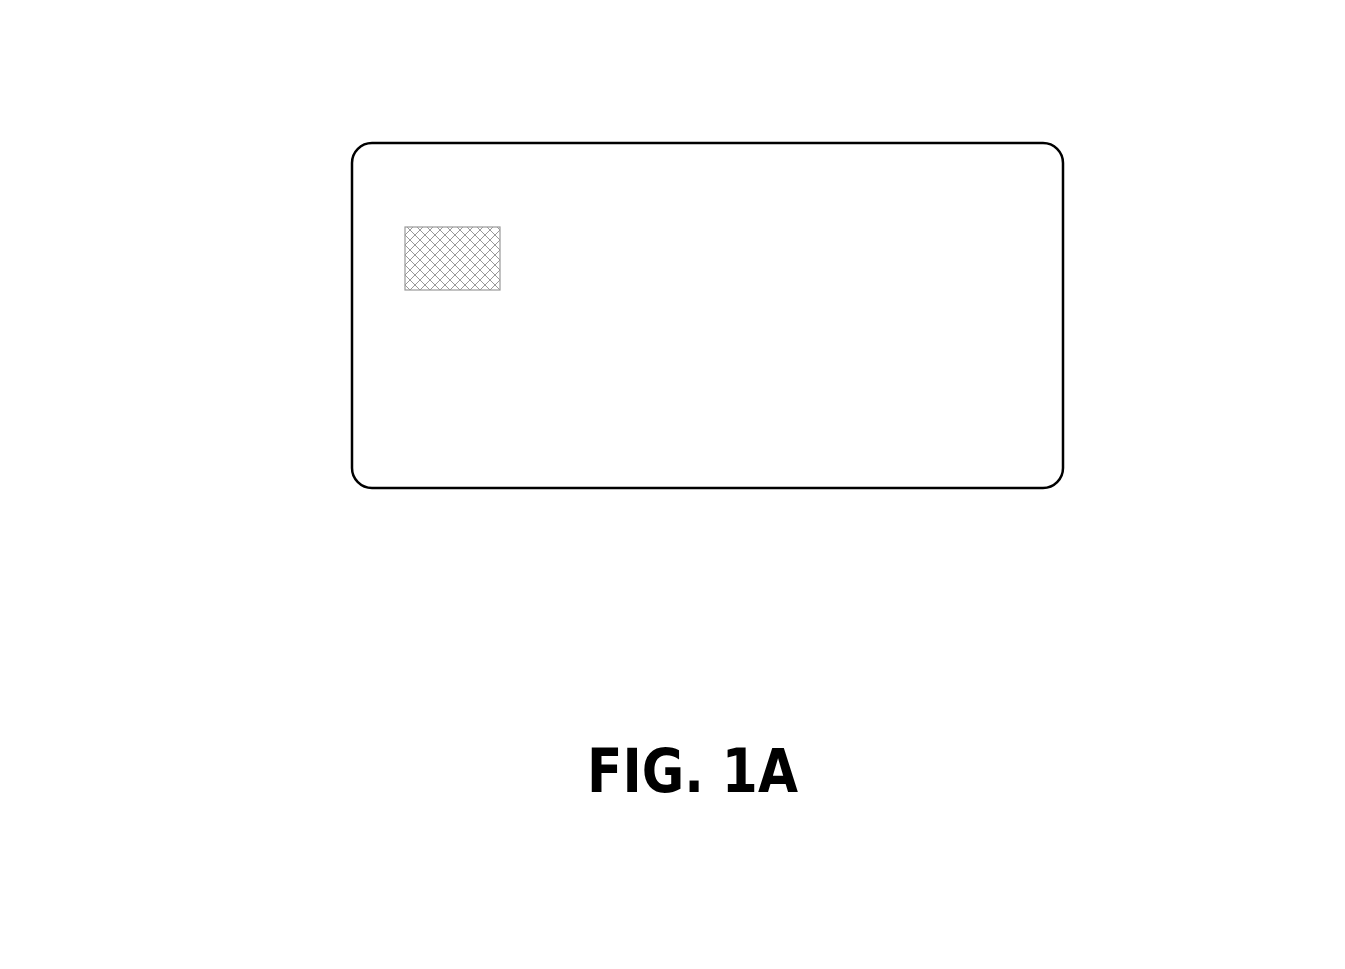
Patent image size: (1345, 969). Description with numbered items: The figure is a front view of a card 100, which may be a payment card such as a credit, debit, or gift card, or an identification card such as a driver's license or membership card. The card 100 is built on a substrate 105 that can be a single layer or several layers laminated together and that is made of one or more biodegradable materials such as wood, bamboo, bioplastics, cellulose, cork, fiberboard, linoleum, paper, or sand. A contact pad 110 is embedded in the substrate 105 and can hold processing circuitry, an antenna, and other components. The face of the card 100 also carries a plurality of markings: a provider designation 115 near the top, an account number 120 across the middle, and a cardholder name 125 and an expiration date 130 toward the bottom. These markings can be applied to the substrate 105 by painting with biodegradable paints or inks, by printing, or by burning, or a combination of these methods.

The card 100 is at (684, 359).
The substrate 105 is at (372, 166).
The contact pad 110 is at (405, 253).
The provider designation 115 is at (779, 166).
The account number 120 is at (910, 339).
The cardholder name 125 is at (368, 403).
The expiration date 130 is at (360, 500).